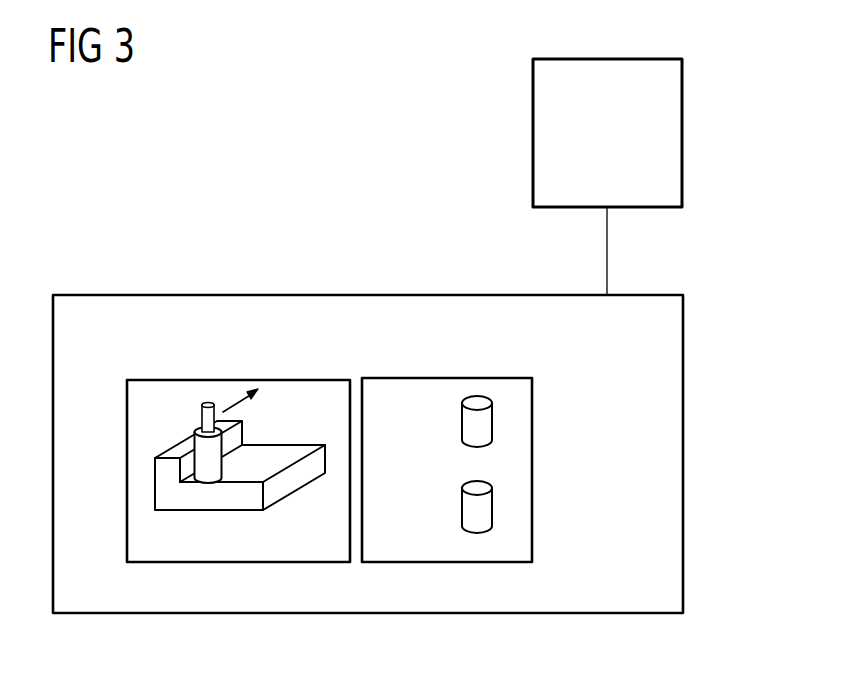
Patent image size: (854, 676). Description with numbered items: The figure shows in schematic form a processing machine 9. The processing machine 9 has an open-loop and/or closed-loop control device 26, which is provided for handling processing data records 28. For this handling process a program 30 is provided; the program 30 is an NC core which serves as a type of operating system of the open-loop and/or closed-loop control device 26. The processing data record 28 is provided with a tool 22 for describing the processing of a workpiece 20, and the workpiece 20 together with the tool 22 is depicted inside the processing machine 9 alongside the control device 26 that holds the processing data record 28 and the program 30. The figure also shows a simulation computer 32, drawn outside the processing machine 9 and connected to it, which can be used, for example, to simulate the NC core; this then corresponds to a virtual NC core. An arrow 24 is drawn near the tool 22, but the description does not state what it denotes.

The processing machine 9 is at (683, 473).
The workpiece 20 is at (290, 478).
The tool 22 is at (208, 463).
The direction of movement 24 is at (230, 402).
The open-loop and/or closed-loop control device 26 is at (532, 470).
The processing data record 28 is at (492, 423).
The program 30 is at (492, 510).
The simulation computer 32 is at (682, 135).